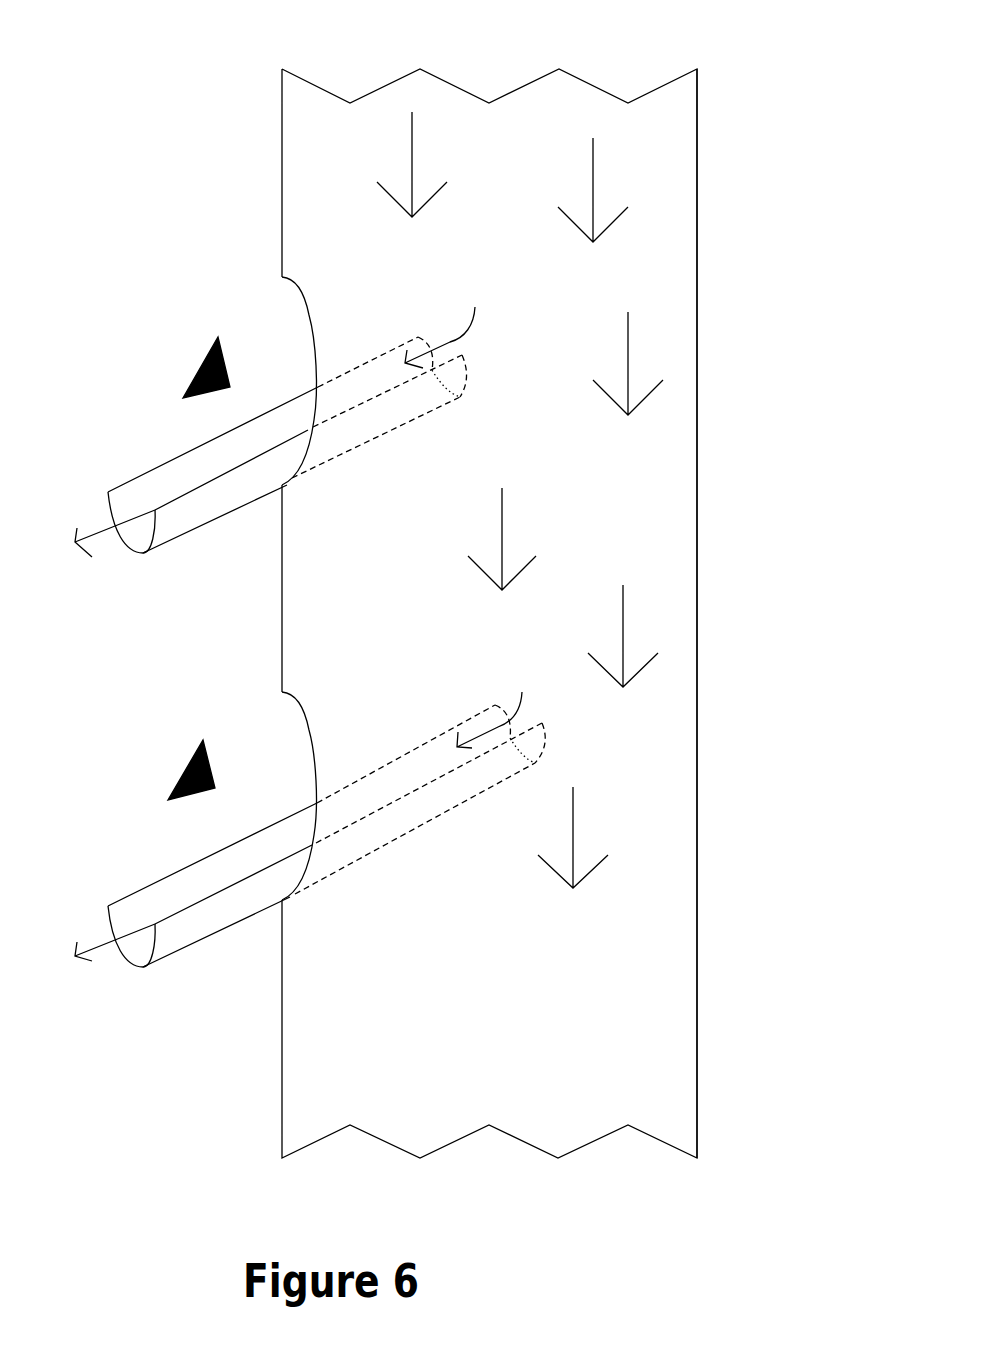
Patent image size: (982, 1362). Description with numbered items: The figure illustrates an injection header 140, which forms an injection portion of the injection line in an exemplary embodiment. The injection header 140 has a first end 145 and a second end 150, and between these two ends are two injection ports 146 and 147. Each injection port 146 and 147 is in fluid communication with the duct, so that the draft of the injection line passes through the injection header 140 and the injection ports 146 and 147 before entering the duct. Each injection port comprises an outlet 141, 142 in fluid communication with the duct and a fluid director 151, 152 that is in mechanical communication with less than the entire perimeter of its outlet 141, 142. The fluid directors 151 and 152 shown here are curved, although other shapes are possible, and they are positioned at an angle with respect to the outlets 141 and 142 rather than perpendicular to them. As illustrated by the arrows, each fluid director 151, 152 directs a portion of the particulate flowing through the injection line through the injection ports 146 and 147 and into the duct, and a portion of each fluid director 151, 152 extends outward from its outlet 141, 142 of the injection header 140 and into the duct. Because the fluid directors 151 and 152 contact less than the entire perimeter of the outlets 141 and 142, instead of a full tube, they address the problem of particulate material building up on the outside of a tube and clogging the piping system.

The injection header 140 is at (498, 37).
The outlet 141 is at (308, 337).
The outlet 142 is at (313, 765).
The first end 145 is at (697, 208).
The injection port 146 is at (200, 367).
The injection port 147 is at (188, 767).
The second end 150 is at (697, 1073).
The fluid director 151 is at (382, 415).
The fluid director 152 is at (403, 820).